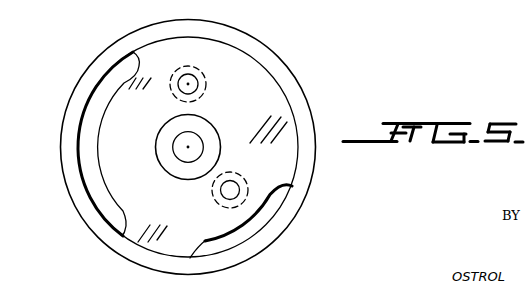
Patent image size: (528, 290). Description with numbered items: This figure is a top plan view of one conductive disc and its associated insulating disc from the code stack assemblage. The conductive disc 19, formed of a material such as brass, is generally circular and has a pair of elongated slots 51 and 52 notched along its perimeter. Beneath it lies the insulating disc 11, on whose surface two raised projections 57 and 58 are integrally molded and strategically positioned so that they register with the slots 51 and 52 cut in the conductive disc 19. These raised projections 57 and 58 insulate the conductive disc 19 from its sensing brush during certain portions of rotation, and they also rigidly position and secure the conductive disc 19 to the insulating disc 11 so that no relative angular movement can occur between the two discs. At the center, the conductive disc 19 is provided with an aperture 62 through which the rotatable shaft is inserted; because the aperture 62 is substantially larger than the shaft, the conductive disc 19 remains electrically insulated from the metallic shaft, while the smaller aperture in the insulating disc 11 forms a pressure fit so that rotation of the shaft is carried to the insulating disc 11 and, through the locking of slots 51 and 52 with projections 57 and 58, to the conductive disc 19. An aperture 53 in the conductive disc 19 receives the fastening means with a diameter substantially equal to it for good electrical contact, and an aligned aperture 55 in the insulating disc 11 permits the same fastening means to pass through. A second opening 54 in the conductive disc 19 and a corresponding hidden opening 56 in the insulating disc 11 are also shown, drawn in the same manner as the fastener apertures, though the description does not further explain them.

The insulating disc 11 is at (284, 58).
The conductive disc 19 is at (250, 120).
The elongated slot 51 is at (205, 241).
The elongated slot 52 is at (98, 135).
The aperture 53 is at (229, 191).
The upper pin hole 54 is at (198, 85).
The aperture 55 is at (212, 189).
The upper counterbore (hidden) 56 is at (206, 69).
The raised projection 57 is at (263, 217).
The raised projection 58 is at (77, 163).
The aperture 62 is at (160, 161).